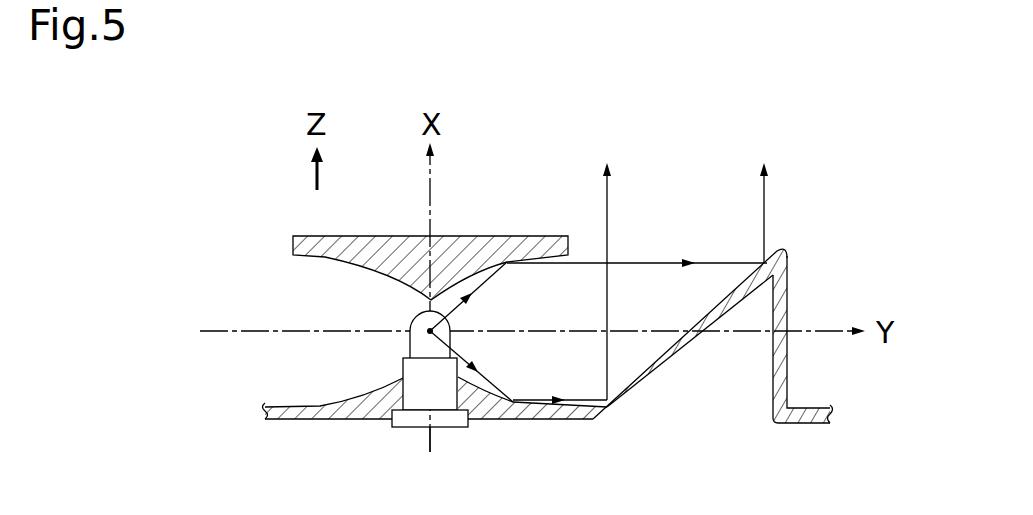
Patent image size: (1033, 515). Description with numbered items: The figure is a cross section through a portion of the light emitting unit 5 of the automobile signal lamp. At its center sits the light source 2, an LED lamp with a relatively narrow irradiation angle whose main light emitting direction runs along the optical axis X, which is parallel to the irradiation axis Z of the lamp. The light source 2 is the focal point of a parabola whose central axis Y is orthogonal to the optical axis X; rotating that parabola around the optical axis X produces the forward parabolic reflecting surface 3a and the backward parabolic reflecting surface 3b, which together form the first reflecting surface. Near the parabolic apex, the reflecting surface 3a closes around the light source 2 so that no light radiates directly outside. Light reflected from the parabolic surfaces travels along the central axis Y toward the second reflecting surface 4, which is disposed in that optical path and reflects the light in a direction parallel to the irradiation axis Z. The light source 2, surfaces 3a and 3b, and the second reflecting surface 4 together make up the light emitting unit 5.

The light source 2 is at (420, 395).
The parabolic reflecting surface 3a is at (330, 257).
The parabolic reflecting surface 3b is at (313, 400).
The second reflecting surface 4 is at (704, 306).
The light emitting unit 5 is at (545, 303).